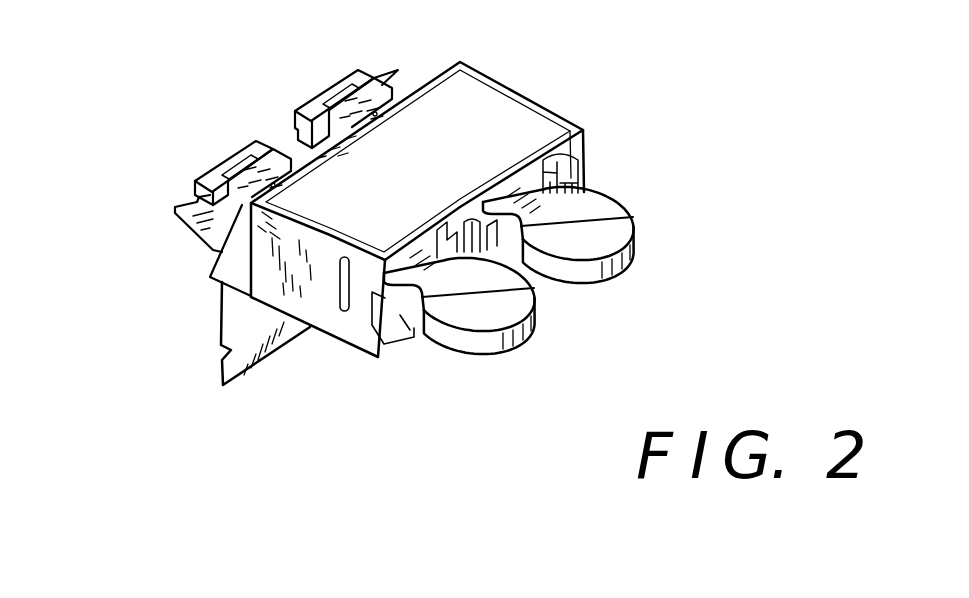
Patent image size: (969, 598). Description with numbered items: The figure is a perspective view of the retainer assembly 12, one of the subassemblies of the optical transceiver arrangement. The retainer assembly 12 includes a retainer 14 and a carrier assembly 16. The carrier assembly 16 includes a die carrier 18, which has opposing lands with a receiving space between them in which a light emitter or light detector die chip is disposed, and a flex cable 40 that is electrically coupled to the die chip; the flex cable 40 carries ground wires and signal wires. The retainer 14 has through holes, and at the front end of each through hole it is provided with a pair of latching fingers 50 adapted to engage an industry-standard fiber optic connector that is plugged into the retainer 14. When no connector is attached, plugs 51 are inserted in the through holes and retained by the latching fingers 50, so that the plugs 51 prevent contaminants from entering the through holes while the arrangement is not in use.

The retainer assembly 12 is at (372, 239).
The retainer 14 is at (417, 178).
The carrier assembly 16 is at (144, 245).
The die carrier 18 is at (262, 130).
The flex cable 40 is at (265, 375).
The latching fingers 50 is at (453, 368).
The plugs 51 is at (558, 318).